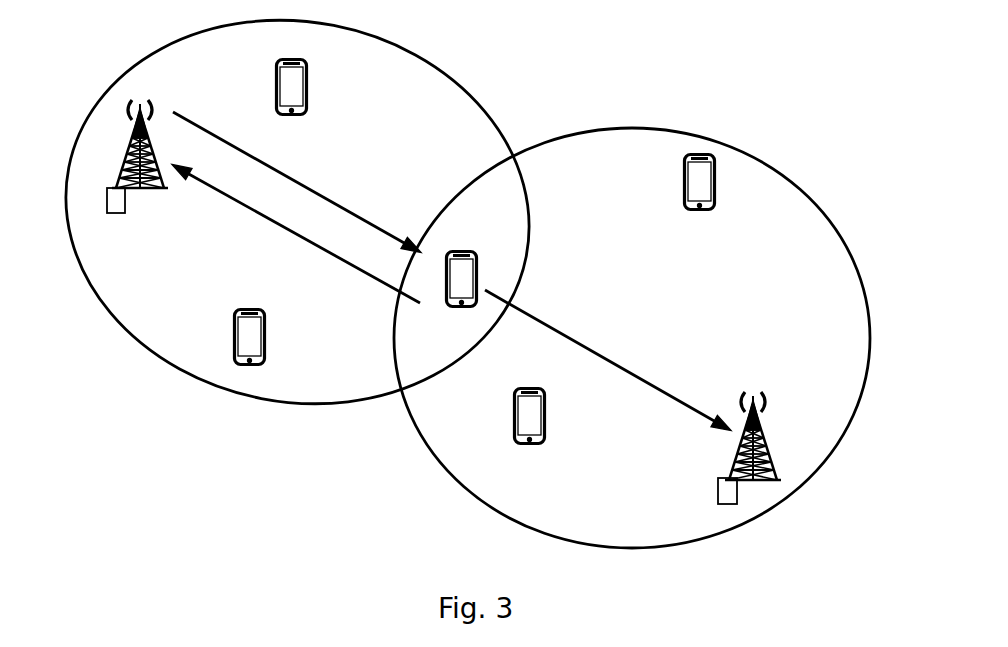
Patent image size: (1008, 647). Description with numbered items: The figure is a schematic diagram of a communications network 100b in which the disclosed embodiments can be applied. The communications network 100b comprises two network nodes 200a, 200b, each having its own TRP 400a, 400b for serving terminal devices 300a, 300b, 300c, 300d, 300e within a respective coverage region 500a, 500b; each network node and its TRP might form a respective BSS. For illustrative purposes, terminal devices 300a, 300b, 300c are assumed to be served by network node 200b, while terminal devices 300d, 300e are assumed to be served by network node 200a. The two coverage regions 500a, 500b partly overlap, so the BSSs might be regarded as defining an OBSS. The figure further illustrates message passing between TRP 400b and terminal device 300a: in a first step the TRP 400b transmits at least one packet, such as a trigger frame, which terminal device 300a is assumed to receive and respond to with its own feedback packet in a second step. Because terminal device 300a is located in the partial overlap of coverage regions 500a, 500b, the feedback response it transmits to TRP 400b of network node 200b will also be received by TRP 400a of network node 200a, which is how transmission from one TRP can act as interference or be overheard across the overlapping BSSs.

The communications network 100b is at (451, 279).
The network node 200a is at (718, 493).
The network node 200b is at (125, 212).
The terminal device 300a is at (477, 268).
The terminal device 300b is at (307, 88).
The terminal device 300c is at (323, 338).
The terminal device 300d is at (604, 406).
The terminal device 300e is at (683, 180).
The TRP 400a is at (753, 393).
The TRP 400b is at (140, 108).
The coverage region 500a is at (503, 513).
The coverage region 500b is at (145, 345).